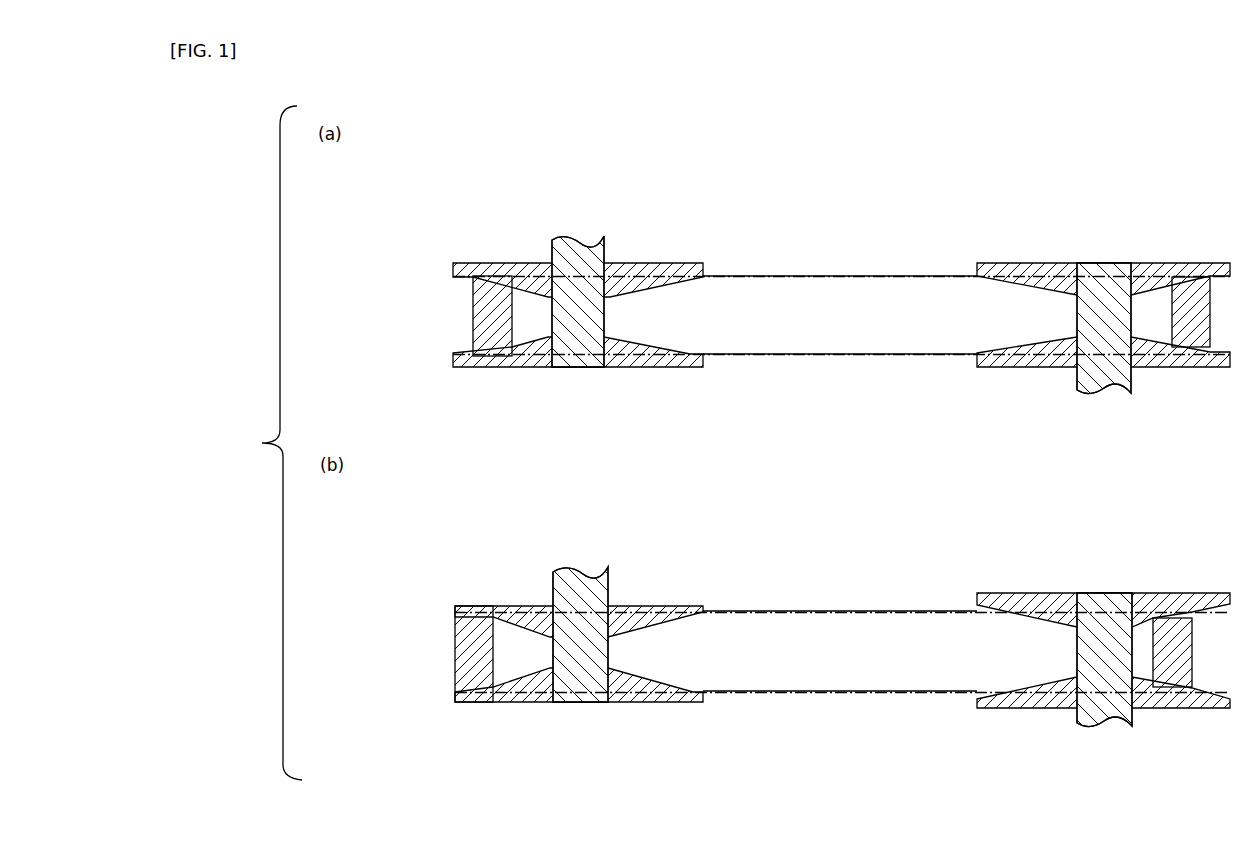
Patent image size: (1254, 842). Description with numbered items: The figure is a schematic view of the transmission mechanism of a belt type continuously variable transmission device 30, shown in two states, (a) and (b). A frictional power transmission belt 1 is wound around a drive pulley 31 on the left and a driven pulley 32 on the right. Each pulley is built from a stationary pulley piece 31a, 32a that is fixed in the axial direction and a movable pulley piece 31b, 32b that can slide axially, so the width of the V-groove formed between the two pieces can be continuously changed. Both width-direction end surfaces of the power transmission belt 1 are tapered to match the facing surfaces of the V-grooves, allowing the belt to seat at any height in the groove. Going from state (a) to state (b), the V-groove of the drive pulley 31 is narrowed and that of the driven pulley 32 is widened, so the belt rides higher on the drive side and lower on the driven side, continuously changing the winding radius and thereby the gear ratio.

The frictional power transmission belt 1 is at (842, 288).
The belt type continuously variable transmission device 30 is at (821, 450).
The drive pulley 31 is at (558, 483).
The stationary pulley piece 31a is at (502, 362).
The movable pulley piece 31b is at (500, 267).
The driven pulley 32 is at (1083, 483).
The stationary pulley piece 32a is at (1190, 265).
The movable pulley piece 32b is at (1192, 360).